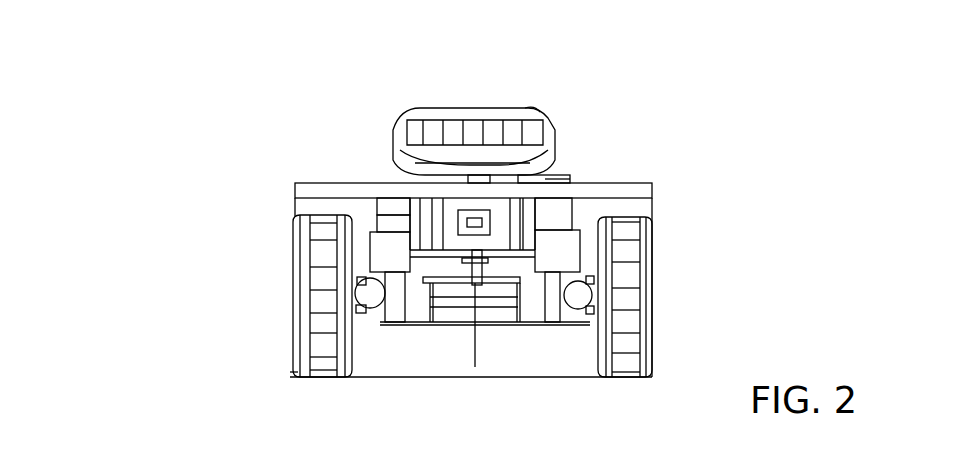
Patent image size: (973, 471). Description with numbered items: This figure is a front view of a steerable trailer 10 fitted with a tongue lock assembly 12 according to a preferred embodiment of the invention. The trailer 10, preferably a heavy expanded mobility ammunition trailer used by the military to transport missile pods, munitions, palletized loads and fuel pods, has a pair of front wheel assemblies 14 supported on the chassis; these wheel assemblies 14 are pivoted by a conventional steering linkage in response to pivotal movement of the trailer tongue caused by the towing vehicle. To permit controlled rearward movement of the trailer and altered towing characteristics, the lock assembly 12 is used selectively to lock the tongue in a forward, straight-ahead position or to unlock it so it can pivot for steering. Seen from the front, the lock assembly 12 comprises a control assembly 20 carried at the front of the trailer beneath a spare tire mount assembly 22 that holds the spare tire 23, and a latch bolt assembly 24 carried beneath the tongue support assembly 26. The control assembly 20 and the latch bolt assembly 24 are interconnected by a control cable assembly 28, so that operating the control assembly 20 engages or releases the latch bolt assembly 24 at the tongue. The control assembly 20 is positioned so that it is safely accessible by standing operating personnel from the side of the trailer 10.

The steerable trailer 10 is at (657, 192).
The tongue lock assembly 12 is at (390, 171).
The front wheel assemblies 14 is at (325, 300).
The control assembly 20 is at (573, 172).
The spare tire mount assembly 22 is at (402, 118).
The spare tire 23 is at (527, 112).
The latch bolt assembly 24 is at (475, 367).
The tongue support assembly 26 is at (437, 283).
The control cable assembly 28 is at (361, 231).